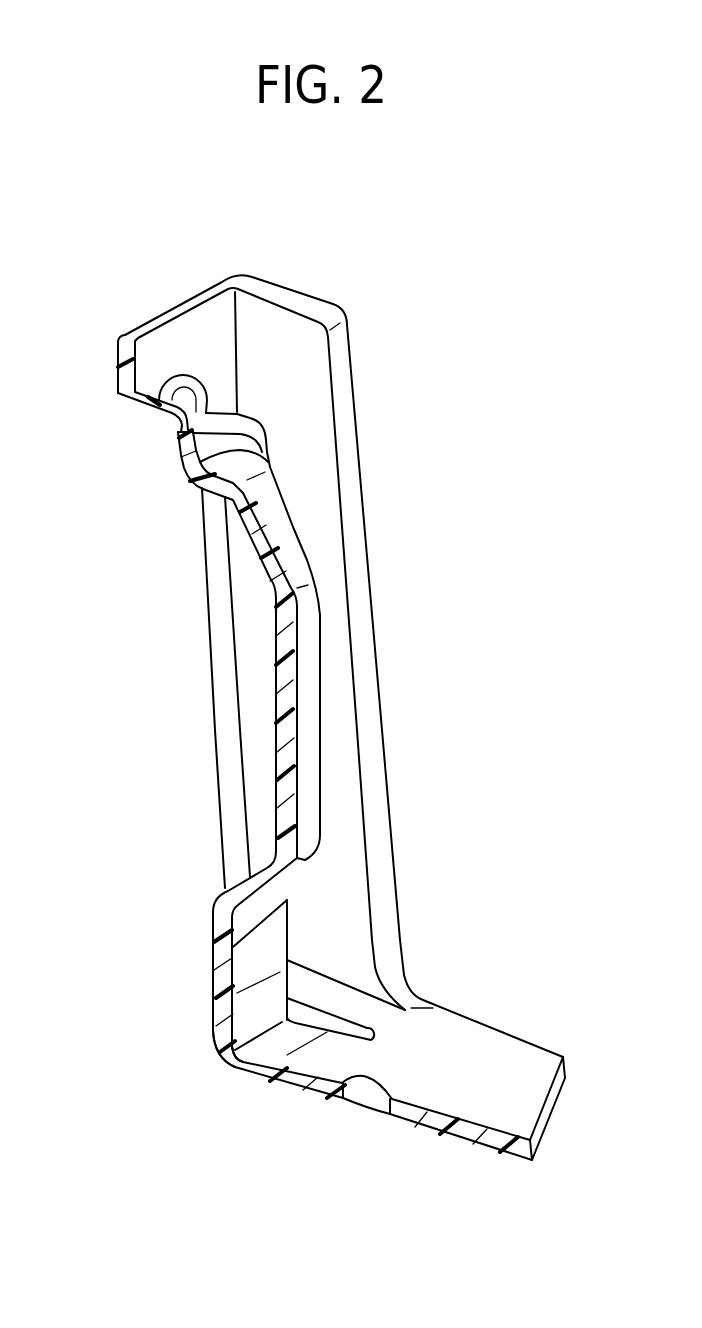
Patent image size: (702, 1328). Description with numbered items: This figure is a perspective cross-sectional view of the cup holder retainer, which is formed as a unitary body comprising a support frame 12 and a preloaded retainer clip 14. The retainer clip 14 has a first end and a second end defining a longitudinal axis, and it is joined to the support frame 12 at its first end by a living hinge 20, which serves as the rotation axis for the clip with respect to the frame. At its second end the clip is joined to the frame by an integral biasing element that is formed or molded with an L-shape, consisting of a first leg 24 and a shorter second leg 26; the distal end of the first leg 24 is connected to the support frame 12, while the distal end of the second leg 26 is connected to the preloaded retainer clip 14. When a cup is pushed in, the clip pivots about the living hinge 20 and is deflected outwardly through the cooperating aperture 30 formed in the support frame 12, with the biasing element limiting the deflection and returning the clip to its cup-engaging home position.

The support frame 12 is at (187, 327).
The preloaded retainer clip 14 is at (305, 637).
The living hinge 20 is at (247, 1035).
The first leg 24 is at (162, 375).
The second leg 26 is at (181, 432).
The aperture 30 is at (174, 388).